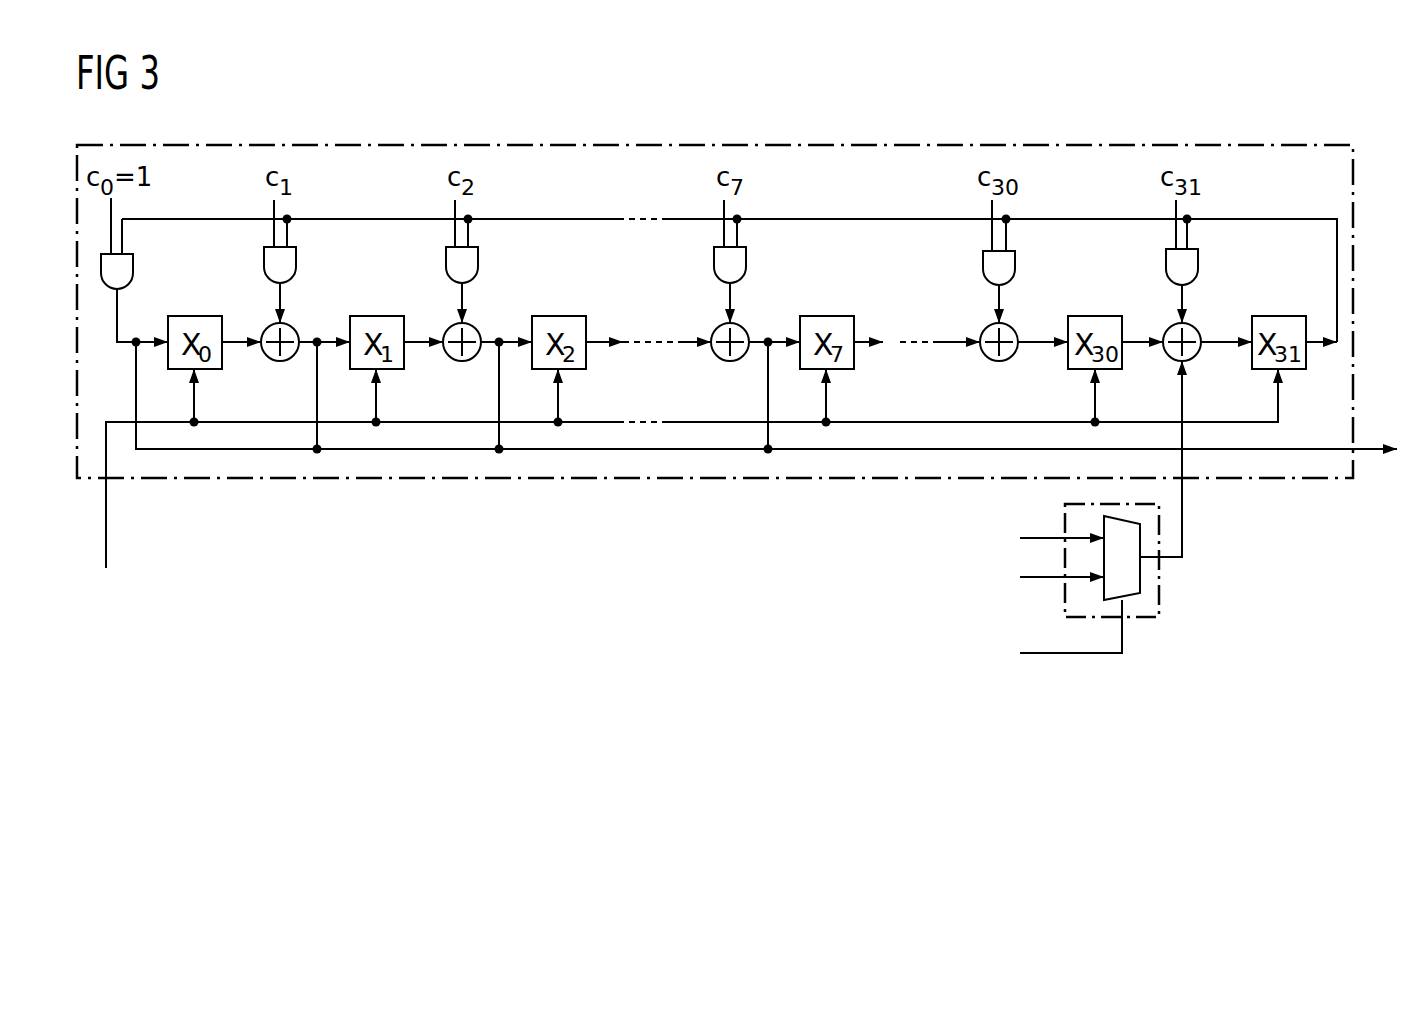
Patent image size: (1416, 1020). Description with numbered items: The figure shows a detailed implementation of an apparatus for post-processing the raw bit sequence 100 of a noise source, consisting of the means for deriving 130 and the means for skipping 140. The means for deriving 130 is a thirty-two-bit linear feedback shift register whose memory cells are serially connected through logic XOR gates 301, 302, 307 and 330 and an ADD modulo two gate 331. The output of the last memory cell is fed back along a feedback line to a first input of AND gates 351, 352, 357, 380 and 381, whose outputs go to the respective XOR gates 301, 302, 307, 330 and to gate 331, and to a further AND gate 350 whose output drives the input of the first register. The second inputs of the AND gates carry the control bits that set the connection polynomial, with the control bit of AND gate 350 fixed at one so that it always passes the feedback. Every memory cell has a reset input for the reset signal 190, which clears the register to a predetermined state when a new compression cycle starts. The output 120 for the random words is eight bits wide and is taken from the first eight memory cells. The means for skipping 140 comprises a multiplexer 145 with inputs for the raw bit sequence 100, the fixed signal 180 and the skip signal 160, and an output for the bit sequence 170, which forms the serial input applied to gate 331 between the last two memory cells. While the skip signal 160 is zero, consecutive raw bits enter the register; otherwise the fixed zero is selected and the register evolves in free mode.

The means for deriving 130 is at (627, 143).
The AND gate 350 is at (133, 271).
The AND gate 351 is at (296, 265).
The AND gate 352 is at (478, 265).
The AND gate 357 is at (746, 265).
The AND gate 380 is at (1015, 267).
The AND gate 381 is at (1198, 265).
The logic XOR gate 301 is at (317, 310).
The logic XOR gate 302 is at (499, 310).
The logic XOR gate 307 is at (767, 310).
The logic XOR gate 330 is at (1036, 310).
The ADD modulo 2 gate 331 is at (1219, 310).
The output for the random words 120 is at (1359, 446).
The reset signal 190 is at (106, 514).
The bit sequence 170 is at (1183, 523).
The raw bit sequence 100 is at (1030, 538).
The fixed signal 180 is at (1050, 577).
The skip signal 160 is at (1052, 653).
The multiplexer 145 is at (1141, 578).
The means for skipping 140 is at (1140, 620).